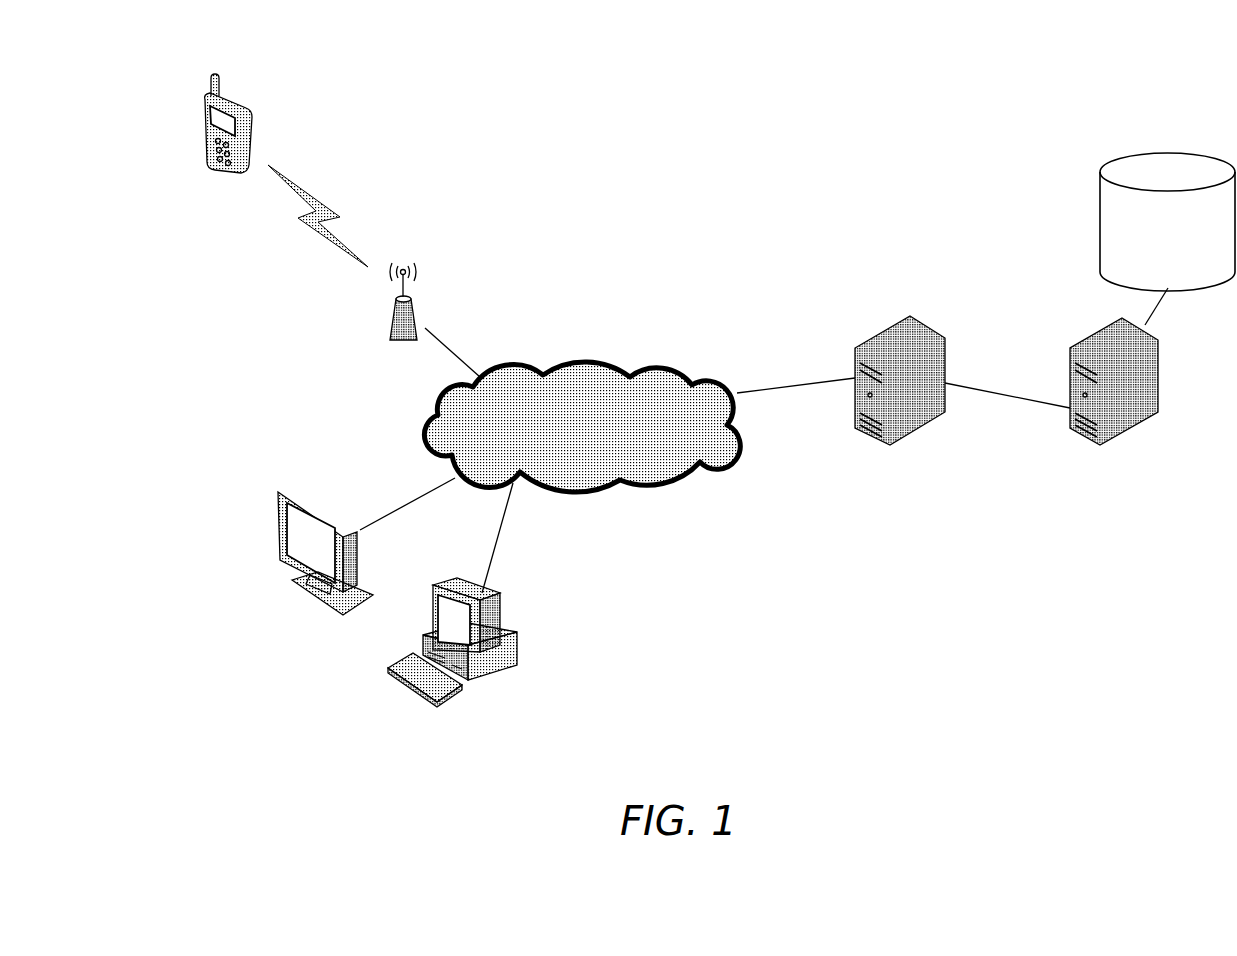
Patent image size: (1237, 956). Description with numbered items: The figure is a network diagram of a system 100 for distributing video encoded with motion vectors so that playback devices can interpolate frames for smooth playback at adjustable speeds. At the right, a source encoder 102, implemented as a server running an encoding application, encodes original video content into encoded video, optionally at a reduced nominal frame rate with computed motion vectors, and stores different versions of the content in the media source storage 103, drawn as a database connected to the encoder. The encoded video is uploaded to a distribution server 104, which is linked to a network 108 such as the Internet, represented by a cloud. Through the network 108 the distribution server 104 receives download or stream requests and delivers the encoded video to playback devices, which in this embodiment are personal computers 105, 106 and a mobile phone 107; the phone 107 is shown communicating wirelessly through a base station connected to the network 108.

The system 100 is at (722, 215).
The source encoder 102 is at (1160, 377).
The media source storage 103 is at (1100, 215).
The distribution server 104 is at (924, 320).
The personal computer 105 is at (393, 683).
The personal computer 106 is at (298, 590).
The mobile phone 107 is at (240, 100).
The network 108 is at (615, 483).